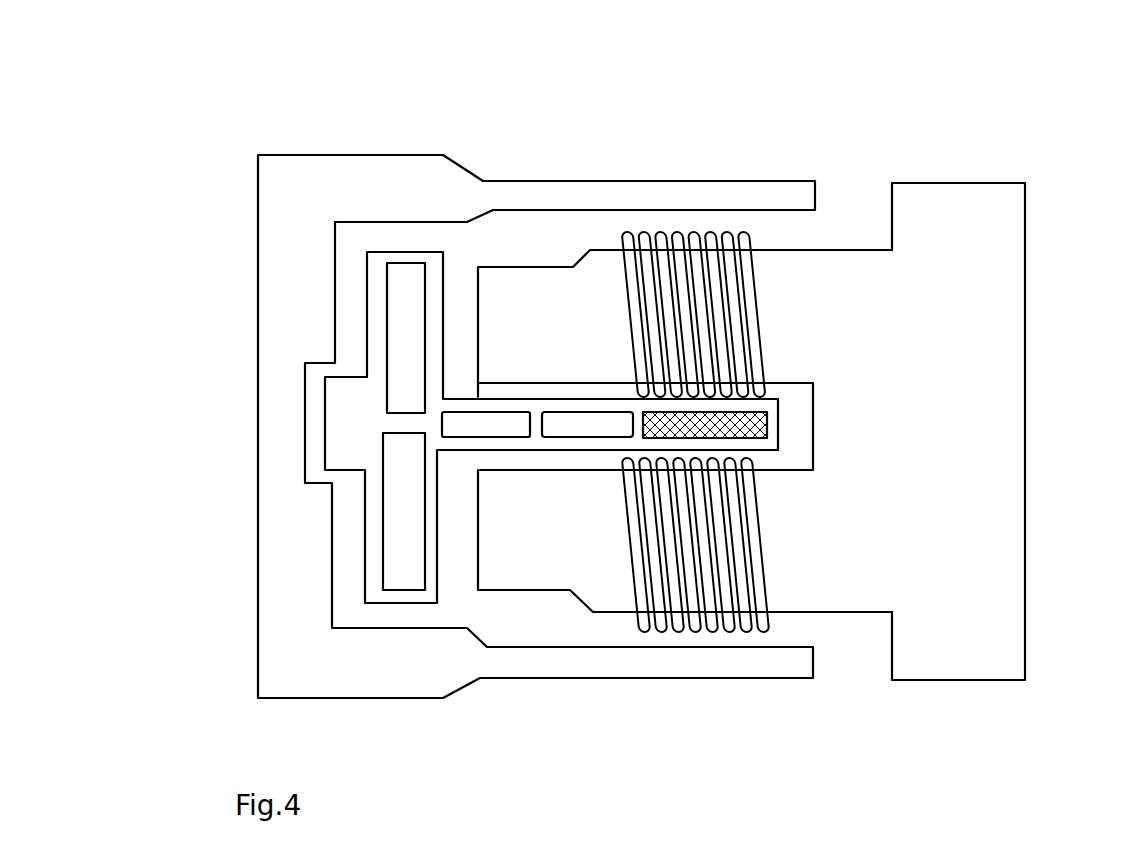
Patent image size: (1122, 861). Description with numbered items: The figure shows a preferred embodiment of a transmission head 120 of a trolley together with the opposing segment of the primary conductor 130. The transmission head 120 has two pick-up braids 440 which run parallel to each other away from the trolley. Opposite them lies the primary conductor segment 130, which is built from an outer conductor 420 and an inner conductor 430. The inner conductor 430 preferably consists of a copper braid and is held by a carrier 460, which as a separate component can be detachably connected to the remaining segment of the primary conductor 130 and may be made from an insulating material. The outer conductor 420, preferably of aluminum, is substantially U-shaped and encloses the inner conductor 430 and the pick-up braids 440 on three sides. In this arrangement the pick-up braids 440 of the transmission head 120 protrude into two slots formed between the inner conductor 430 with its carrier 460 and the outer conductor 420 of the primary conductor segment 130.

The transmission head 120 is at (1043, 208).
The primary conductor segment 130 is at (178, 137).
The outer conductor 420 is at (298, 322).
The inner conductor 430 is at (733, 372).
The pick-up braids 440 is at (641, 343).
The carrier 460 is at (547, 452).